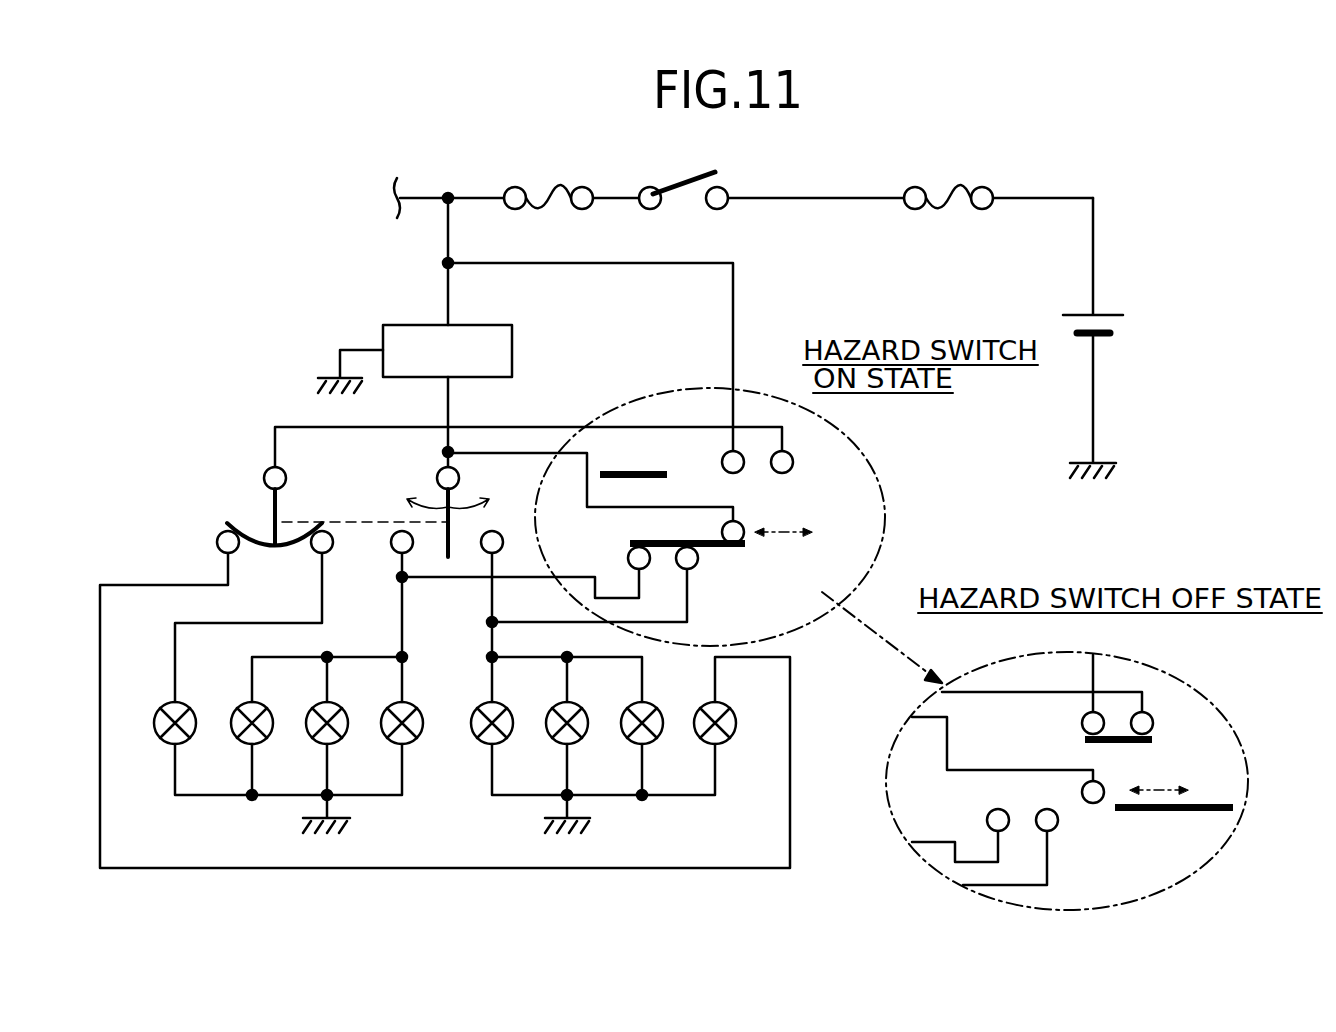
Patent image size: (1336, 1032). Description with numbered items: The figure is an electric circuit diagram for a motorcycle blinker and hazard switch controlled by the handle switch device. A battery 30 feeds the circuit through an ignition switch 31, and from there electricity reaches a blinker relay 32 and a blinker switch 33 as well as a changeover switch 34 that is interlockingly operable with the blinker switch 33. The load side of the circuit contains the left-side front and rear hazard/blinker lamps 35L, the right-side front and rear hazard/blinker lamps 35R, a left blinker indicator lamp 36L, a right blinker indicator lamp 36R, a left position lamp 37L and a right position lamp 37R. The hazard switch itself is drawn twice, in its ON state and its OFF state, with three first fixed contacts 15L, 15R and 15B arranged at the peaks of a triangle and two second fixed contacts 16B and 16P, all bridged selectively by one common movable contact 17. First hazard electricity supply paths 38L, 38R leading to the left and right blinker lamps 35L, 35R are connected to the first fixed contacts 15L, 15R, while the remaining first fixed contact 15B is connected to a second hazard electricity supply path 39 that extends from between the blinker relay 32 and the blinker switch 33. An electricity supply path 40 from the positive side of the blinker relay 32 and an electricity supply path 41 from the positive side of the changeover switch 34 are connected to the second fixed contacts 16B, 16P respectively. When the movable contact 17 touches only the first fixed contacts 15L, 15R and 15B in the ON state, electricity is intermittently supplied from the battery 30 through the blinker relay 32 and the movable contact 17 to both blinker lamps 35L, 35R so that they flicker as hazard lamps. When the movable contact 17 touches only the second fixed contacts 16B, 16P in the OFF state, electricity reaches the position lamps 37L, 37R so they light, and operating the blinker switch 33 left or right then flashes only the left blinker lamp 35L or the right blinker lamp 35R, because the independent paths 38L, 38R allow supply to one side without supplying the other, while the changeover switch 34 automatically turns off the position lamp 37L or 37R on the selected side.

The battery 30 is at (1115, 315).
The ignition switch 31 is at (683, 182).
The blinker relay 32 is at (408, 333).
The blinker switch 33 is at (442, 498).
The changeover switch 34 is at (255, 533).
The left-side front and rear hazard/blinker lamps 35L is at (335, 738).
The right-side front and rear hazard/blinker lamps 35R is at (500, 740).
The left blinker indicator lamp 36L is at (238, 725).
The right blinker indicator lamp 36R is at (655, 730).
The left position lamp 37L is at (160, 725).
The right position lamp 37R is at (725, 730).
The first hazard electricity supply path 38L is at (540, 577).
The first hazard electricity supply path 38R is at (668, 633).
The second hazard electricity supply path 39 is at (527, 452).
The electricity supply path 40 is at (735, 302).
The electricity supply path 41 is at (760, 427).
The first fixed contact 15L is at (630, 558).
The first fixed contact 15R is at (697, 565).
The first fixed contact 15B is at (742, 538).
The second fixed contact 16B is at (740, 470).
The second fixed contact 16P is at (790, 455).
The movable contact 17 is at (710, 543).